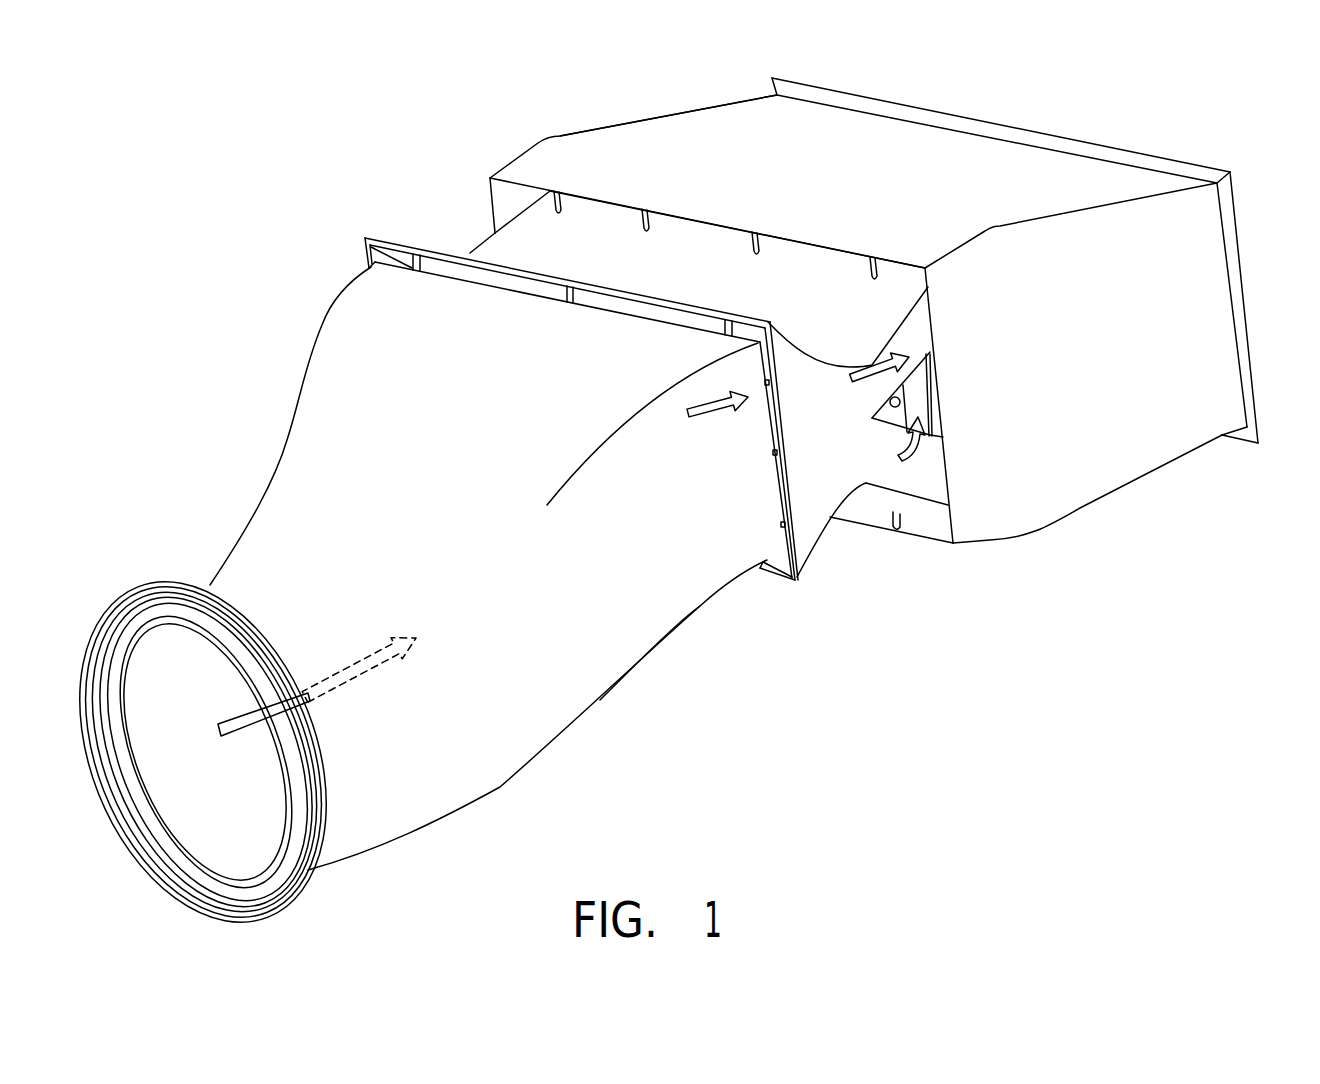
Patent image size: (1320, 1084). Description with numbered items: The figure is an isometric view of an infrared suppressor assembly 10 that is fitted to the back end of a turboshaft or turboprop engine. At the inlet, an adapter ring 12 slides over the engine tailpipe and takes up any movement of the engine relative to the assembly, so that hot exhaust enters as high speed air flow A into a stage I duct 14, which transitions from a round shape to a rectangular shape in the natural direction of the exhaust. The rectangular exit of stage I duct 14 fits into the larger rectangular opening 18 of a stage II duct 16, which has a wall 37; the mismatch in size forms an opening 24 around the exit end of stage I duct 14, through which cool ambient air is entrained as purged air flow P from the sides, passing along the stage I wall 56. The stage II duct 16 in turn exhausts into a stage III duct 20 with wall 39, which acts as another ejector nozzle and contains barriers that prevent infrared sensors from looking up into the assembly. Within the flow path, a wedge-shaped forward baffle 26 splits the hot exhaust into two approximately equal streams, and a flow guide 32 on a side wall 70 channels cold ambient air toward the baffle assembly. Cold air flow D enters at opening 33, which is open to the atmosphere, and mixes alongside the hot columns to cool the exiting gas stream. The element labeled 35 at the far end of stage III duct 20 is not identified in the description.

The infrared suppressor assembly 10 is at (233, 181).
The adapter ring 12 is at (120, 579).
The stage I duct 14 is at (325, 314).
The stage II duct 16 is at (816, 541).
The rectangular opening 18 is at (435, 243).
The stage III duct 20 is at (672, 110).
The opening 24 is at (520, 282).
The forward baffle 26 is at (883, 401).
The flow guide 32 is at (934, 389).
The opening 33 is at (706, 234).
The end flange 35 is at (1163, 153).
The wall 37 is at (768, 302).
The wall 39 is at (814, 169).
The stage I wall 56 is at (658, 529).
The side wall 70 is at (834, 462).
The high speed air flow A is at (240, 722).
The cold air flow D is at (873, 367).
The purged air flow P is at (710, 412).